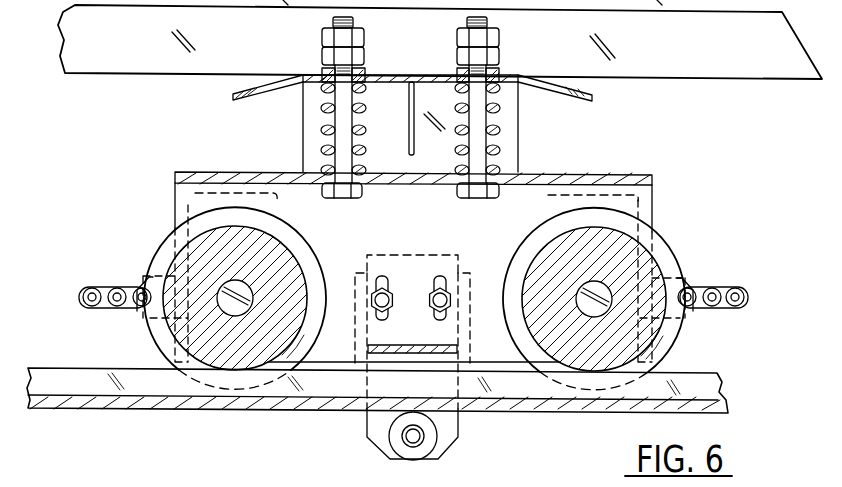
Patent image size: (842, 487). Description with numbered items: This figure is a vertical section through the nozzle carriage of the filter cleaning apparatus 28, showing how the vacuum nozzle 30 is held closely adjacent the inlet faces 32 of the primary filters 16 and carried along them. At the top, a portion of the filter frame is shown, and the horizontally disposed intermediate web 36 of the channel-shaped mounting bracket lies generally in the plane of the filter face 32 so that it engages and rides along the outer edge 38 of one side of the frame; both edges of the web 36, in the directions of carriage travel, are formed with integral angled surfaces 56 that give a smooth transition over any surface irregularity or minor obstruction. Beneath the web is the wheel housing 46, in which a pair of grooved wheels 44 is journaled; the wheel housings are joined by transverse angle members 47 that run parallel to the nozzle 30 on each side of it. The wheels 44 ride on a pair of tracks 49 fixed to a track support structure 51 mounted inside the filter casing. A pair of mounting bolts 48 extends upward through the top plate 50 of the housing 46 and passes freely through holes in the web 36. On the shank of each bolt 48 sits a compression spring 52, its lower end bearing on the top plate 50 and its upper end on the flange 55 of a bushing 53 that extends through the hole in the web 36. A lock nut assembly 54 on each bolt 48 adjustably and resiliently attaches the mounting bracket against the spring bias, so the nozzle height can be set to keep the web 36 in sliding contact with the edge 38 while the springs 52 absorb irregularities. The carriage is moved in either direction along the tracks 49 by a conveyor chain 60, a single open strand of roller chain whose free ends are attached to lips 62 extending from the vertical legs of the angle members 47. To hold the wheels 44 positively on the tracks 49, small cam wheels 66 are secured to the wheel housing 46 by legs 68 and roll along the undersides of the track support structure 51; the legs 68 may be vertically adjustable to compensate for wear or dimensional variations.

The primary filter 16 is at (791, 81).
The filter cleaning apparatus 28 is at (688, 122).
The vacuum nozzle 30 is at (302, 117).
The inlet face 32 is at (181, 75).
The intermediate web 36 is at (389, 75).
The outer edge 38 is at (137, 75).
The grooved wheel 44 is at (305, 257).
The wheel housing 46 is at (503, 246).
The transverse angle member 47 is at (189, 204).
The mounting bolt 48 is at (338, 141).
The track 49 is at (110, 372).
The top plate 50 is at (593, 174).
The track support structure 51 is at (201, 410).
The compression spring 52 is at (460, 150).
The bushing 53 is at (324, 67).
The lock nut assembly 54 is at (321, 38).
The flange 55 is at (326, 84).
The angled surface 56 is at (232, 89).
The conveyor chain 60 is at (113, 311).
The lip 62 is at (139, 283).
The cam wheel 66 is at (395, 438).
The leg 68 is at (458, 437).